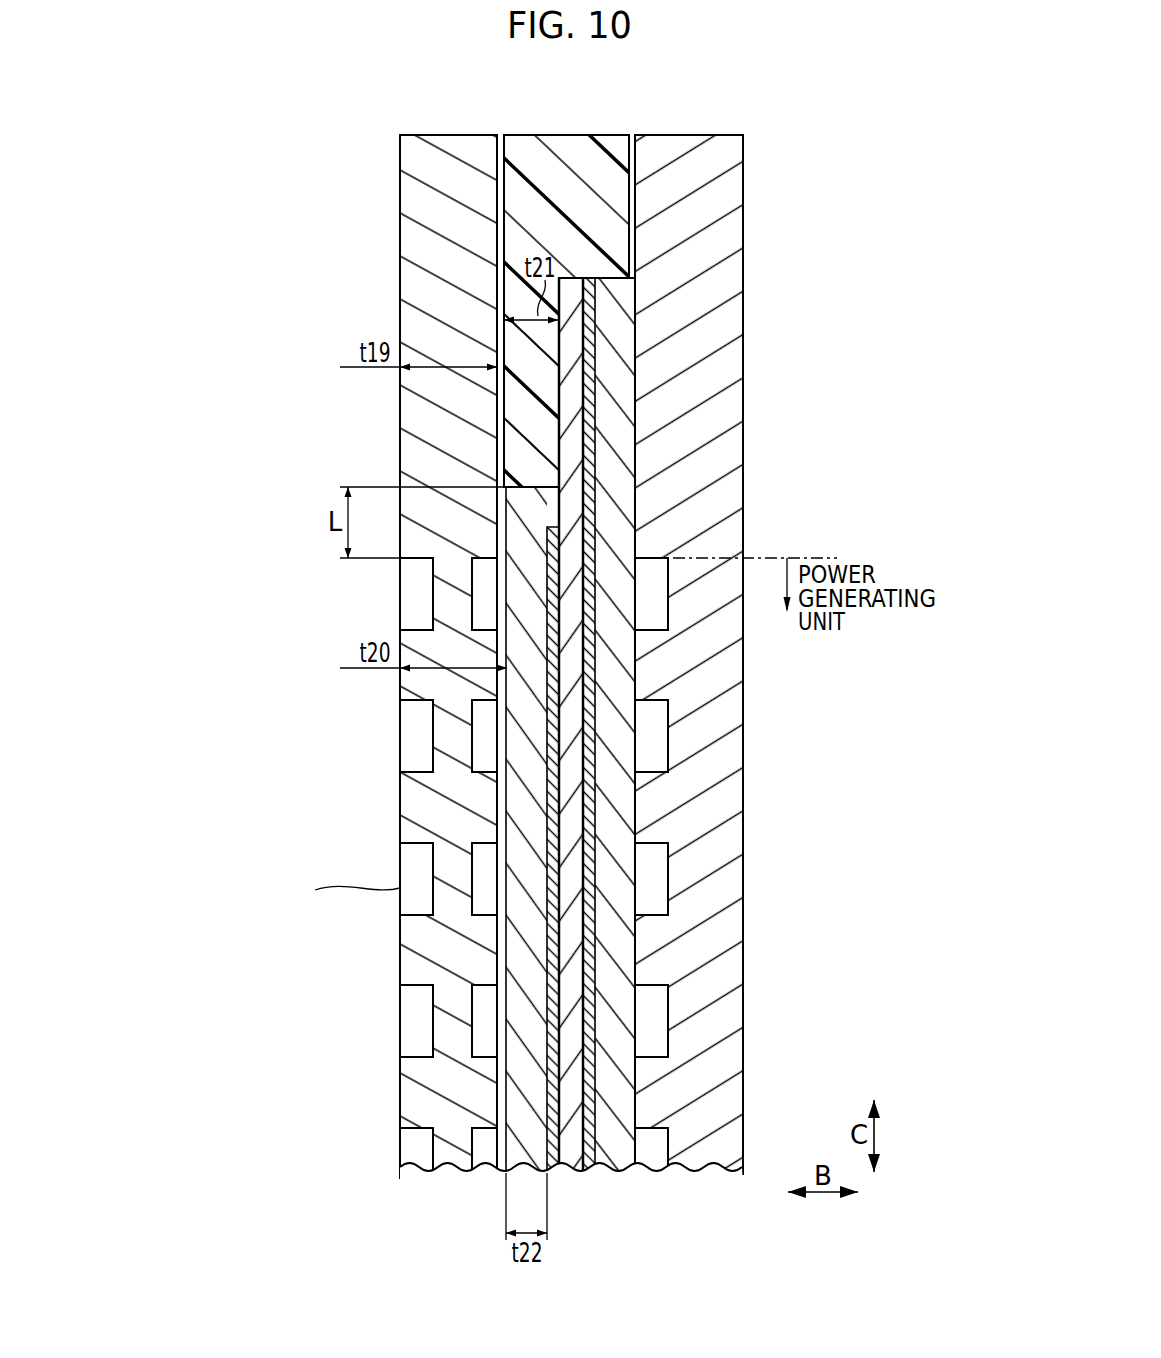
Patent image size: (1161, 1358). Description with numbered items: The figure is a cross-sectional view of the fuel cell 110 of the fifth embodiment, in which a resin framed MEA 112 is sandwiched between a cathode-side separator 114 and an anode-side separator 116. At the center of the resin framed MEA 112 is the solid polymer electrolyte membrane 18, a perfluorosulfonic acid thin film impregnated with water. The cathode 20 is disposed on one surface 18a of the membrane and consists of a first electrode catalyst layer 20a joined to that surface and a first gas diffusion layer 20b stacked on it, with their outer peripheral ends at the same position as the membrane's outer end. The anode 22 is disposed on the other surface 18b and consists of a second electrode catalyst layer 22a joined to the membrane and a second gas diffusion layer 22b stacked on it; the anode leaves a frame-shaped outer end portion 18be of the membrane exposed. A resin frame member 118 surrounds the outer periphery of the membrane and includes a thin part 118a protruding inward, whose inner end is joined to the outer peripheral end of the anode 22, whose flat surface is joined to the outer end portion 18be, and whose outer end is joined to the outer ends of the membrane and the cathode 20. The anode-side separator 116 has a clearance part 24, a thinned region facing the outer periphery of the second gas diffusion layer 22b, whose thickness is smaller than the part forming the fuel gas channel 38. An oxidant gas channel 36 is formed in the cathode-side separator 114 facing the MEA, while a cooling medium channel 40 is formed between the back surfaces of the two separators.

The fuel cell 110 is at (668, 86).
The resin framed MEA 112 is at (570, 769).
The cathode-side separator 114 is at (715, 628).
The anode-side separator 116 is at (358, 628).
The resin frame member 118 is at (484, 326).
The thin part 118a is at (547, 340).
The solid polymer electrolyte membrane 18 is at (550, 752).
The surface 18a is at (580, 1140).
The another surface 18b is at (545, 1150).
The outer end portion 18be is at (553, 413).
The cathode 20 is at (716, 726).
The first electrode catalyst layer 20a is at (594, 943).
The first gas diffusion layer 20b is at (617, 1007).
The anode 22 is at (414, 831).
The second electrode catalyst layer 22a is at (558, 945).
The second gas diffusion layer 22b is at (523, 1008).
The clearance part 24 is at (500, 450).
The oxidant gas channel 36 is at (651, 701).
The fuel gas channel 38 is at (487, 701).
The cooling medium channel 40 is at (421, 844).